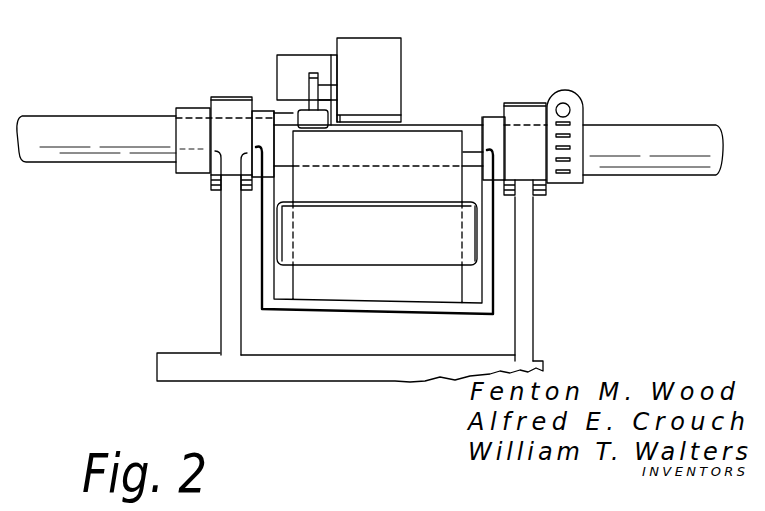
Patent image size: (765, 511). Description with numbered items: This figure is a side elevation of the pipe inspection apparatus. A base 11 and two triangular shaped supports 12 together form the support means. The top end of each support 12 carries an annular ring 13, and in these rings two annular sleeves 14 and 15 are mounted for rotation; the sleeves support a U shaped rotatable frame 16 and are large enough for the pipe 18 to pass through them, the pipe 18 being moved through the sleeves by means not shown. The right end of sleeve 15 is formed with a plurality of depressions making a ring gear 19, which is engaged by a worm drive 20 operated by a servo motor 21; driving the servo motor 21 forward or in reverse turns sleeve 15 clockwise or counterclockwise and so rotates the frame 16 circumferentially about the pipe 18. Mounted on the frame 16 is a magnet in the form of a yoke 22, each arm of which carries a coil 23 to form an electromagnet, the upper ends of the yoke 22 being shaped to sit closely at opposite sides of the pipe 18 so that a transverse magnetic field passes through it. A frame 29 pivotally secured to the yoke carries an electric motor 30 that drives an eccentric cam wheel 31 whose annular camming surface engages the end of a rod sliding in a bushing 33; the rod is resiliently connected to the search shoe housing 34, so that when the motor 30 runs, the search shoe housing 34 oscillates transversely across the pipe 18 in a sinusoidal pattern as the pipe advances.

The base 11 is at (157, 362).
The triangular shaped support 12 is at (528, 288).
The annular ring 13 is at (227, 97).
The annular sleeve 14 is at (197, 108).
The annular sleeve 15 is at (490, 117).
The U shaped rotatable frame 16 is at (363, 311).
The pipe 18 is at (657, 125).
The ring gear 19 is at (563, 183).
The worm drive 20 is at (565, 103).
The servo motor 21 is at (582, 135).
The yoke 22 is at (416, 140).
The coil 23 is at (390, 243).
The frame 29 is at (401, 50).
The electric motor 30 is at (297, 55).
The eccentric cam wheel 31 is at (334, 55).
The bushing 33 is at (309, 88).
The search shoe housing 34 is at (313, 122).